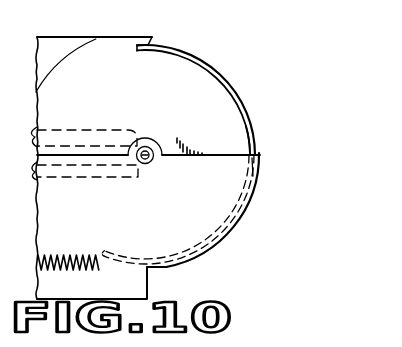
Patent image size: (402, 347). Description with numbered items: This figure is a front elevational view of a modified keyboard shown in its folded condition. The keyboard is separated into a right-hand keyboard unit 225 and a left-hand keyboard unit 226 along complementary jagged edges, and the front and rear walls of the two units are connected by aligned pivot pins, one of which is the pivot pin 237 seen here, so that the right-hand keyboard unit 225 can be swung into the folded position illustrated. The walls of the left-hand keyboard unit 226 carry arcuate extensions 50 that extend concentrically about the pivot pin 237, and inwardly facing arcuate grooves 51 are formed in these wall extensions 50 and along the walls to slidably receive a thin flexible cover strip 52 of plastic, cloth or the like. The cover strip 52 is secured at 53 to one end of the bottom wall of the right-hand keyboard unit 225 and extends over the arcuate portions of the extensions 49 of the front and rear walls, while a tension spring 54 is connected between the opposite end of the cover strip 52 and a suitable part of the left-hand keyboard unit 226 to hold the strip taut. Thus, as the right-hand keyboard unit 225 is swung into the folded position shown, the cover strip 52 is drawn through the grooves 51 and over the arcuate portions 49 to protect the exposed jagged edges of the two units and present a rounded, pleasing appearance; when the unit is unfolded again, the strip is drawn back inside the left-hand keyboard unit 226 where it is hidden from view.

The extensions of the front and rear walls 49 is at (226, 118).
The arcuate extensions 50 is at (225, 192).
The arcuate grooves 51 is at (243, 224).
The cover strip 52 is at (236, 92).
The securing point of cover strip 53 is at (148, 45).
The tension spring 54 is at (83, 255).
The right-hand keyboard unit 225 is at (221, 72).
The left-hand keyboard unit 226 is at (167, 273).
The pivot pin 237 is at (150, 148).